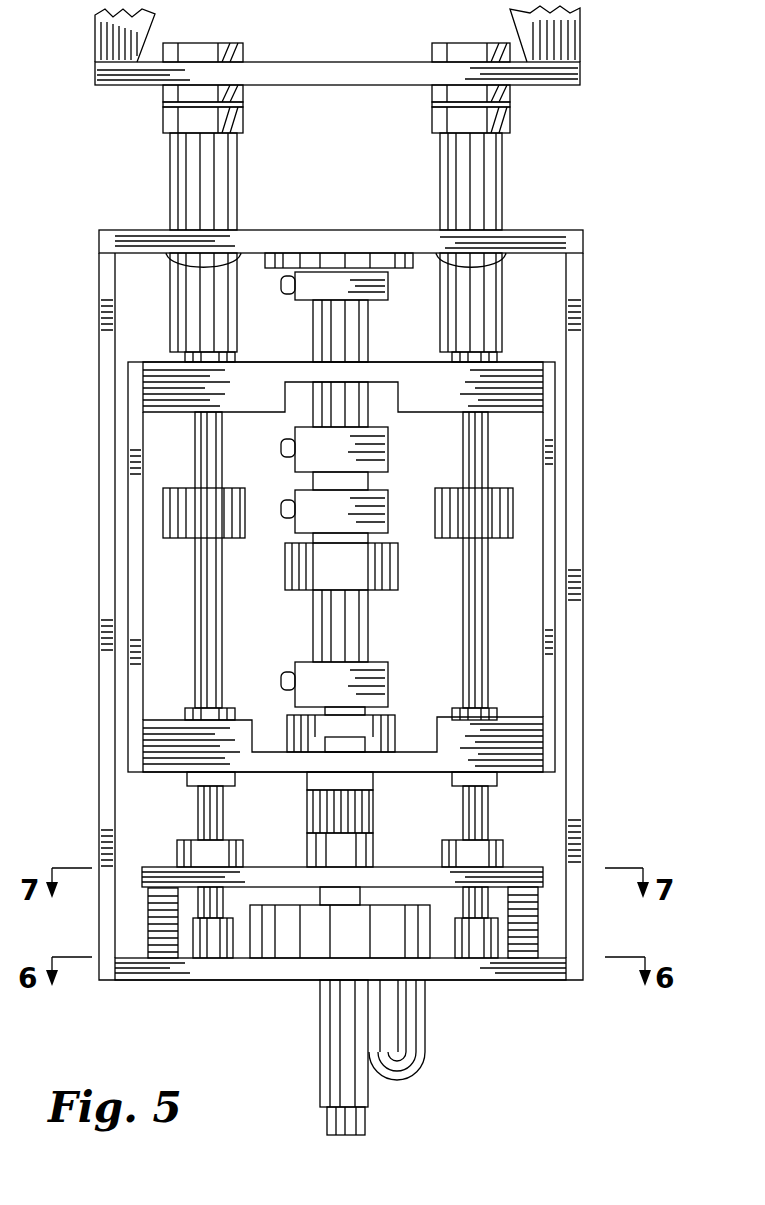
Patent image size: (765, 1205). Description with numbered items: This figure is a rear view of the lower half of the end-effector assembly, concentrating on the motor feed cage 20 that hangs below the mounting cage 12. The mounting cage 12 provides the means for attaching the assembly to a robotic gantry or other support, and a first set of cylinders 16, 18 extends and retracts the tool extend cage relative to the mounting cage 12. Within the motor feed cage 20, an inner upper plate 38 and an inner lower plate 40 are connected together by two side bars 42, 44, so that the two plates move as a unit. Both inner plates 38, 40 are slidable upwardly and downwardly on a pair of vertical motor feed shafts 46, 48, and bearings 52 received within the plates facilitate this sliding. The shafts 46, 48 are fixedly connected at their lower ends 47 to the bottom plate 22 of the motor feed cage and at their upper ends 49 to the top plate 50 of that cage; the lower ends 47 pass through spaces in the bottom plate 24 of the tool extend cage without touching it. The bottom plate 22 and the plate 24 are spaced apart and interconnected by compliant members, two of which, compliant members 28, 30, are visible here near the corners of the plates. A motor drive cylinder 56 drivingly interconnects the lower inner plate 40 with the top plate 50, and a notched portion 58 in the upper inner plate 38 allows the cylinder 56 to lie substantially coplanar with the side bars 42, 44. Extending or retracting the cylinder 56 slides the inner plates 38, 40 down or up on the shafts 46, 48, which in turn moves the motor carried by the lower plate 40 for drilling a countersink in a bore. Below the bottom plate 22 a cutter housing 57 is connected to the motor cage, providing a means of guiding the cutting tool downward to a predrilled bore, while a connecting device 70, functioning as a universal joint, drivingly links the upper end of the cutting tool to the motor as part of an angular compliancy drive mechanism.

The mounting cage 12 is at (585, 72).
The cylinder 16 is at (170, 152).
The cylinder 18 is at (488, 163).
The motor feed cage 20 is at (597, 450).
The horizontal plate 22 is at (262, 962).
The plate 24 is at (522, 868).
The compliant member 28 is at (152, 945).
The compliant member 30 is at (540, 922).
The inner upper plate 38 is at (398, 372).
The inner lower plate 40 is at (412, 760).
The side bar 42 is at (556, 486).
The side bar 44 is at (129, 518).
The motor feed shaft 46 is at (480, 574).
The lower end 47 is at (202, 945).
The motor feed shaft 48 is at (206, 626).
The upper end 49 is at (178, 265).
The top plate 50 is at (545, 242).
The bearing 52 is at (188, 356).
The motor drive cylinder 56 is at (356, 570).
The cutter housing 57 is at (398, 1085).
The notched portion 58 is at (274, 372).
The connecting device 70 is at (307, 817).